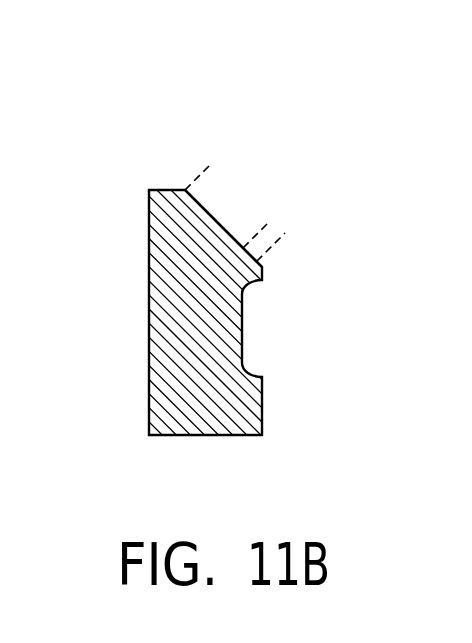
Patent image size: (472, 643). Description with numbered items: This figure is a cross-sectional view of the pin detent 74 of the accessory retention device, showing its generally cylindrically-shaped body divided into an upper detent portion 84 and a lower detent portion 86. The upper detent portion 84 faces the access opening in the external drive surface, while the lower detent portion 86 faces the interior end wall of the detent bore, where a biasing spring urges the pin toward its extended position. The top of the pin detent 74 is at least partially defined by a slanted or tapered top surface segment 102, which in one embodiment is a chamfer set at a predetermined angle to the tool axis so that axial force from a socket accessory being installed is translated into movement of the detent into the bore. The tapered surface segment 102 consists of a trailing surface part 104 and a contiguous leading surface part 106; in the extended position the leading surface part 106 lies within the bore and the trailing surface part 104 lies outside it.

The pin detent 74 is at (111, 119).
The upper detent portion 84 is at (124, 196).
The lower detent portion 86 is at (123, 441).
The tapered top surface segment 102 is at (220, 218).
The trailing surface part 104 is at (268, 224).
The leading surface part 106 is at (284, 234).